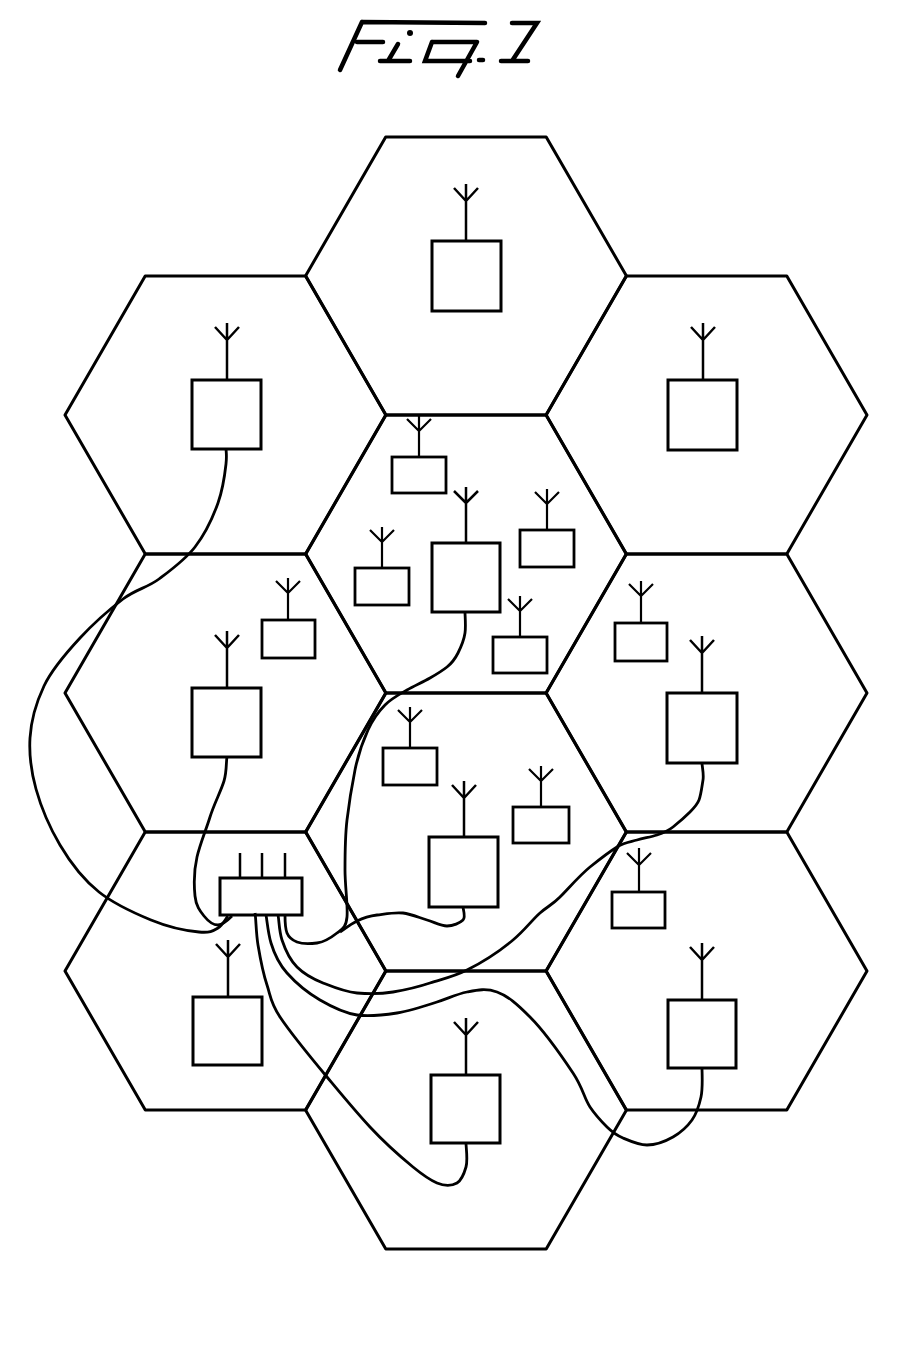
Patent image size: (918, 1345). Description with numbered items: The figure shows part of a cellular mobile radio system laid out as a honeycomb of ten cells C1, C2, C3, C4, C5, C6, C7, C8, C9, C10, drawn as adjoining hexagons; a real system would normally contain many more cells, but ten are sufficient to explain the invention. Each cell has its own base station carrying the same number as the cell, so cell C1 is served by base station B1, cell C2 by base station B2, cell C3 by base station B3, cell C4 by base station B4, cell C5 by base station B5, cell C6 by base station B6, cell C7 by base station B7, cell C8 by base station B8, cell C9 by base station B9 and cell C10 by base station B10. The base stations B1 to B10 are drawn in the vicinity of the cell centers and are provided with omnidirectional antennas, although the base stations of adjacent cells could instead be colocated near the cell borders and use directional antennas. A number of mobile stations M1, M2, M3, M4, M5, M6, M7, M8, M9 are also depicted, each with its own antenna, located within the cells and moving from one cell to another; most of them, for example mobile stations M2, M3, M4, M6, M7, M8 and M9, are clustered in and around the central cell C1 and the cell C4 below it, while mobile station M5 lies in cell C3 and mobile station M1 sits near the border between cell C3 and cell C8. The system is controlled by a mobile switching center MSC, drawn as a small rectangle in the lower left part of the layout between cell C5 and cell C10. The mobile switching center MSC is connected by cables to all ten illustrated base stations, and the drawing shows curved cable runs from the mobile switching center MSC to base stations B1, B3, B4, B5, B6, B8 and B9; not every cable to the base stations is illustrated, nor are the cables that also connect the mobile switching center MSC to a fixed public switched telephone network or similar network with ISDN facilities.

The base station B1 is at (392, 715).
The base station B2 is at (702, 386).
The base station B3 is at (507, 815).
The base station B4 is at (419, 856).
The base station B5 is at (226, 778).
The base station B6 is at (226, 386).
The base station B7 is at (466, 247).
The base station B8 is at (501, 1030).
The base station B9 is at (377, 1049).
The base station B10 is at (227, 1002).
The mobile station M1 is at (638, 888).
The mobile station M2 is at (288, 618).
The mobile station M3 is at (382, 566).
The mobile station M4 is at (547, 528).
The mobile station M5 is at (641, 621).
The mobile station M6 is at (419, 454).
The mobile station M7 is at (520, 634).
The mobile station M8 is at (541, 804).
The mobile station M9 is at (410, 746).
The cell C1 is at (410, 673).
The cell C2 is at (659, 536).
The cell C3 is at (660, 822).
The cell C4 is at (392, 959).
The cell C5 is at (184, 818).
The cell C6 is at (179, 531).
The cell C7 is at (421, 398).
The cell C8 is at (655, 1097).
The cell C9 is at (421, 1236).
The cell C10 is at (147, 1097).
The mobile switching center MSC is at (261, 884).